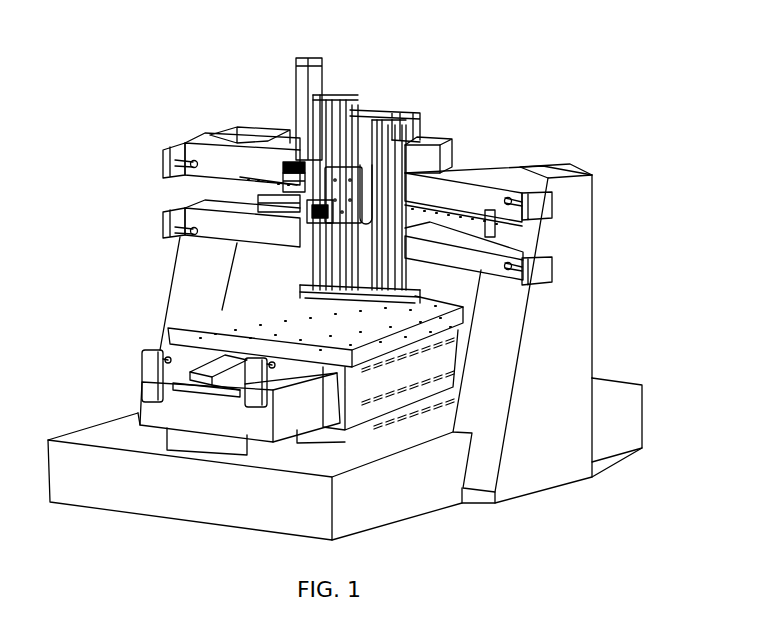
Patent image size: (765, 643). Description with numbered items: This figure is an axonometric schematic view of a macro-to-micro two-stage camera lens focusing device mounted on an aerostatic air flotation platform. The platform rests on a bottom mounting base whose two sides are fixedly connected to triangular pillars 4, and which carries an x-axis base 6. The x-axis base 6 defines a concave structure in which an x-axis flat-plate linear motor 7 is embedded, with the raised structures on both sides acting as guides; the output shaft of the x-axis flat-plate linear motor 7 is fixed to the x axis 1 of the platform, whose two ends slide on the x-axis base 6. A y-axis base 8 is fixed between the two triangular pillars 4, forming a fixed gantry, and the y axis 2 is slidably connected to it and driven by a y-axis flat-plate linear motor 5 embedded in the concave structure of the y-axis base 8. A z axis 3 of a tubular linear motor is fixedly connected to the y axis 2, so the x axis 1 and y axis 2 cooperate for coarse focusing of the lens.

The x axis of the aerostatic air flotation platform 1 is at (220, 343).
The y axis of the aerostatic air flotation platform 2 is at (420, 158).
The z axis of tubular linear motor 3 is at (380, 105).
The triangular pillars 4 is at (570, 327).
The y-axis flat-plate linear motor 5 is at (462, 207).
The x-axis base 6 is at (197, 415).
The x-axis flat-plate linear motor 7 is at (197, 372).
The y-axis base 8 is at (447, 187).